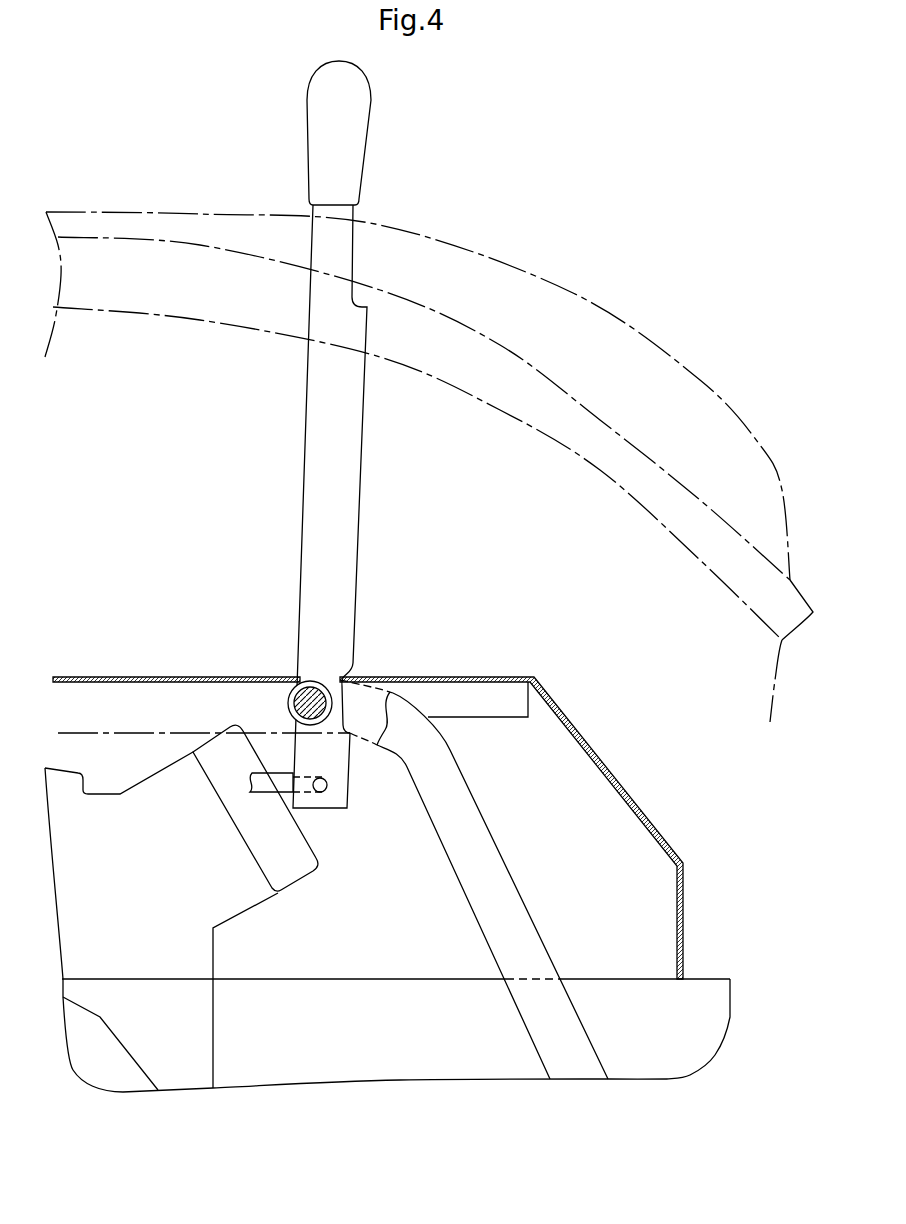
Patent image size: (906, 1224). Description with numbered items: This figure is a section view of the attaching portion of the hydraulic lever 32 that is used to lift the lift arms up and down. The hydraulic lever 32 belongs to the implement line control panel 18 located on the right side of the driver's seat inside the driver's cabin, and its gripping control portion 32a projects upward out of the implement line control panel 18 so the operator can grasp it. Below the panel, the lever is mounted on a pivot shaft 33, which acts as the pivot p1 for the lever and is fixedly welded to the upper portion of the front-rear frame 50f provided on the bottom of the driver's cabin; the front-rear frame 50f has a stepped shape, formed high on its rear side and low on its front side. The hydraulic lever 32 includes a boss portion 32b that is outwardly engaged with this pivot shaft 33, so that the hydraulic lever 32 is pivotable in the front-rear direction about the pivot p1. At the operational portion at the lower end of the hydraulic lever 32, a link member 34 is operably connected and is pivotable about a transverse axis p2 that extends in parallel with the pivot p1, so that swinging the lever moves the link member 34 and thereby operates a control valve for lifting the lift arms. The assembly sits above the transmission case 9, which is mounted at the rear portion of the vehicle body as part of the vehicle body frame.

The implement line control panel 18 is at (576, 295).
The hydraulic lever 32 is at (358, 492).
The gripping control portion 32a is at (362, 110).
The boss portion 32b is at (322, 682).
The pivot shaft 33 is at (289, 701).
The link member 34 is at (273, 788).
The pivot p1 is at (307, 688).
The transverse axis p2 is at (323, 795).
The front-rear frame 50f is at (508, 887).
The transmission case 9 is at (398, 987).